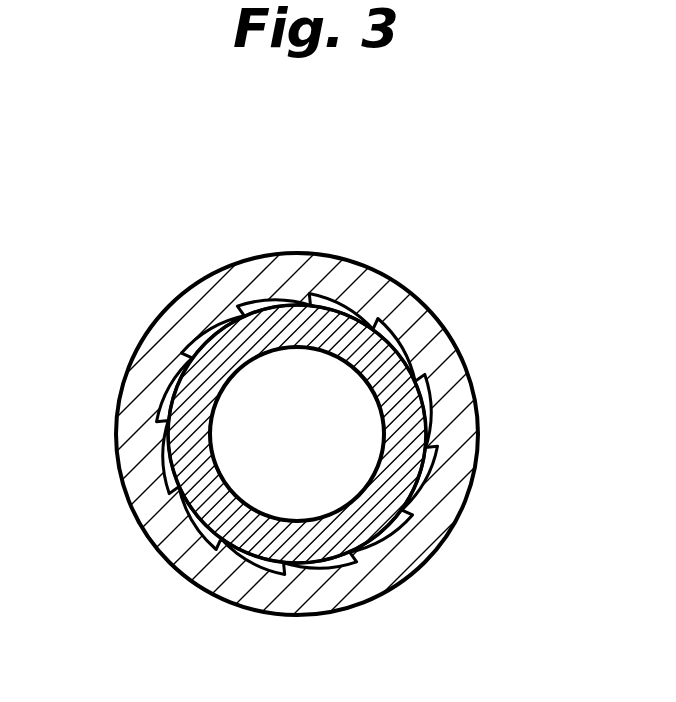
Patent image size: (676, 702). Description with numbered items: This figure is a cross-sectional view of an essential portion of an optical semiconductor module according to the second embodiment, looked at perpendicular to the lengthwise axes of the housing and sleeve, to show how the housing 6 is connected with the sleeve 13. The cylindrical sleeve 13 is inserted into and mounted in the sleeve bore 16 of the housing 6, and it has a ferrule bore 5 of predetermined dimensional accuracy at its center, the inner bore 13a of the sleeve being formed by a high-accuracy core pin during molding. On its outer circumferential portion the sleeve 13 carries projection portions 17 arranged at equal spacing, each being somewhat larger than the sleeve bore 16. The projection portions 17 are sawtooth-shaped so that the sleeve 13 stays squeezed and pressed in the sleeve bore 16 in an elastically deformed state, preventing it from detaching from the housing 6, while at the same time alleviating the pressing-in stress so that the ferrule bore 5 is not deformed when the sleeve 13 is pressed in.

The ferrule bore 5 is at (372, 456).
The housing 6 is at (372, 258).
The sleeve 13 is at (418, 325).
The inner bore 13a is at (228, 463).
The sleeve bore 16 is at (272, 305).
The projection portions 17 is at (436, 437).